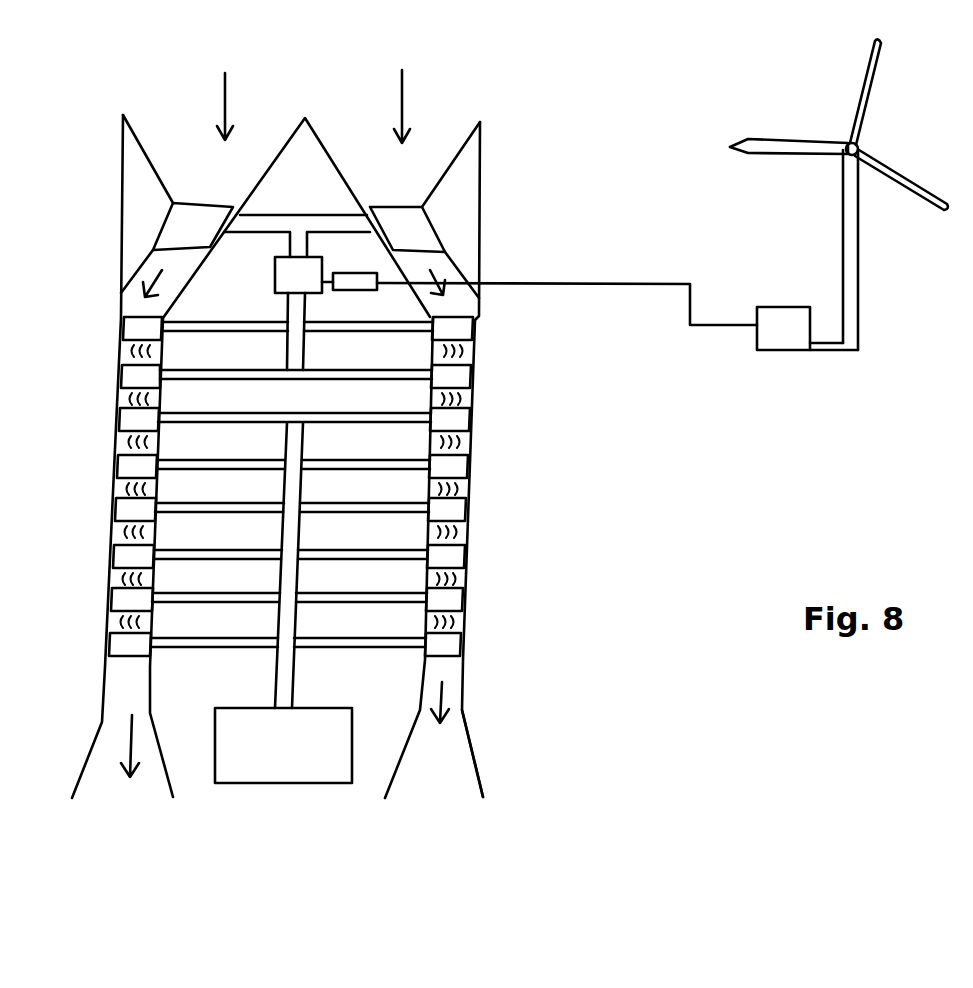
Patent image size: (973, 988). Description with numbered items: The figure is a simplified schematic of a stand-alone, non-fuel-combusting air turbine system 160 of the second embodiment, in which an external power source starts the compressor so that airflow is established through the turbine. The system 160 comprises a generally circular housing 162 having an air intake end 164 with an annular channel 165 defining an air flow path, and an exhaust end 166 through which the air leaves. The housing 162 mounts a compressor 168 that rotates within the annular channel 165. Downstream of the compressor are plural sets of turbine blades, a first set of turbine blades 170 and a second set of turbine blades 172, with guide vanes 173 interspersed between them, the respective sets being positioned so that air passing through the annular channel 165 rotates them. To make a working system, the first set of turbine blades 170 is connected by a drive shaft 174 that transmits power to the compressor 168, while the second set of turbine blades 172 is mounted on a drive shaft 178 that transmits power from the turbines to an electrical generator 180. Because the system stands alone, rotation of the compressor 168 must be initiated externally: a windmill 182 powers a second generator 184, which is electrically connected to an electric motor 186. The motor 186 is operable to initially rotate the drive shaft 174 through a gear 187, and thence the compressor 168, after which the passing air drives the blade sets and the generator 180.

The turbine system 160 is at (495, 250).
The housing 162 is at (470, 440).
The air intake end 164 is at (440, 180).
The annular channel 165 is at (397, 182).
The exhaust end 166 is at (473, 768).
The compressor 168 is at (418, 238).
The first set of turbine blades 170 is at (478, 330).
The second set of turbine blades 172 is at (473, 505).
The guide vanes 173 is at (470, 400).
The drive shaft 174 is at (307, 310).
The drive shaft 178 is at (303, 528).
The electrical generator 180 is at (352, 750).
The windmill 182 is at (860, 318).
The second generator 184 is at (770, 343).
The electric motor 186 is at (347, 272).
The gear 187 is at (275, 272).